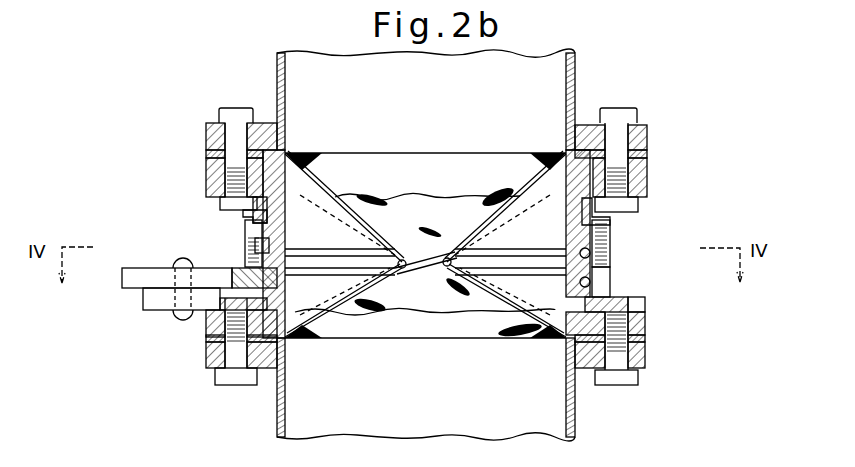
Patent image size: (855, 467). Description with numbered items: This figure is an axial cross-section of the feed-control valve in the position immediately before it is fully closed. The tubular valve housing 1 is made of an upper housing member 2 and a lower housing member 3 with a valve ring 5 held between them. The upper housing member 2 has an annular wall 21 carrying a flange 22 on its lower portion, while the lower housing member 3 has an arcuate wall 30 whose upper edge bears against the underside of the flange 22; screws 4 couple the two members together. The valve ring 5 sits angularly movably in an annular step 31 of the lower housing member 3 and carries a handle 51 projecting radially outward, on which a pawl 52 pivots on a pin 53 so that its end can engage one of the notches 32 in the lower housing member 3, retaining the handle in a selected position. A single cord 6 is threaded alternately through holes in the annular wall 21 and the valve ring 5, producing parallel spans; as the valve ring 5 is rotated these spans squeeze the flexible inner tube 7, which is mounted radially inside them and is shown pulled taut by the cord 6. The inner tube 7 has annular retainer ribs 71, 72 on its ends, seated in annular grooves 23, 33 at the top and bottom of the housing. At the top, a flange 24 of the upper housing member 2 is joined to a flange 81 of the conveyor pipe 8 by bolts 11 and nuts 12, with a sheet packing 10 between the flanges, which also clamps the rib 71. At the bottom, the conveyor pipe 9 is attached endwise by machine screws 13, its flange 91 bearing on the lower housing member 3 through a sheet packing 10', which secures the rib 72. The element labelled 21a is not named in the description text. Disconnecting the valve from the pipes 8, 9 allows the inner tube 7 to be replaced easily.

The tubular valve housing 1 is at (714, 186).
The upper housing member 2 is at (546, 165).
The lower housing member 3 is at (547, 338).
The screws 4 is at (243, 218).
The valve ring 5 is at (590, 290).
The cord 6 is at (380, 268).
The inner tube 7 is at (303, 165).
The conveyor pipe 8 is at (575, 72).
The conveyor pipe 9 is at (277, 418).
The sheet packing 10 is at (632, 133).
The sheet packing 10' is at (647, 343).
The bolts 11 is at (237, 108).
The nuts 12 is at (220, 200).
The machine screws 13 is at (236, 385).
The annular wall 21 is at (285, 218).
The adjusting screw 21a is at (245, 251).
The flange 22 is at (610, 235).
The annular groove 23 is at (270, 190).
The flange 24 is at (647, 158).
The arcuate wall 30 is at (610, 270).
The annular step 31 is at (645, 318).
The notches 32 is at (645, 300).
The annular groove 33 is at (285, 308).
The handle 51 is at (140, 268).
The pawl 52 is at (152, 306).
The pin 53 is at (182, 260).
The annular retainer rib 71 is at (206, 163).
The annular retainer rib 72 is at (206, 336).
The flange 81 is at (206, 130).
The flange 91 is at (645, 360).